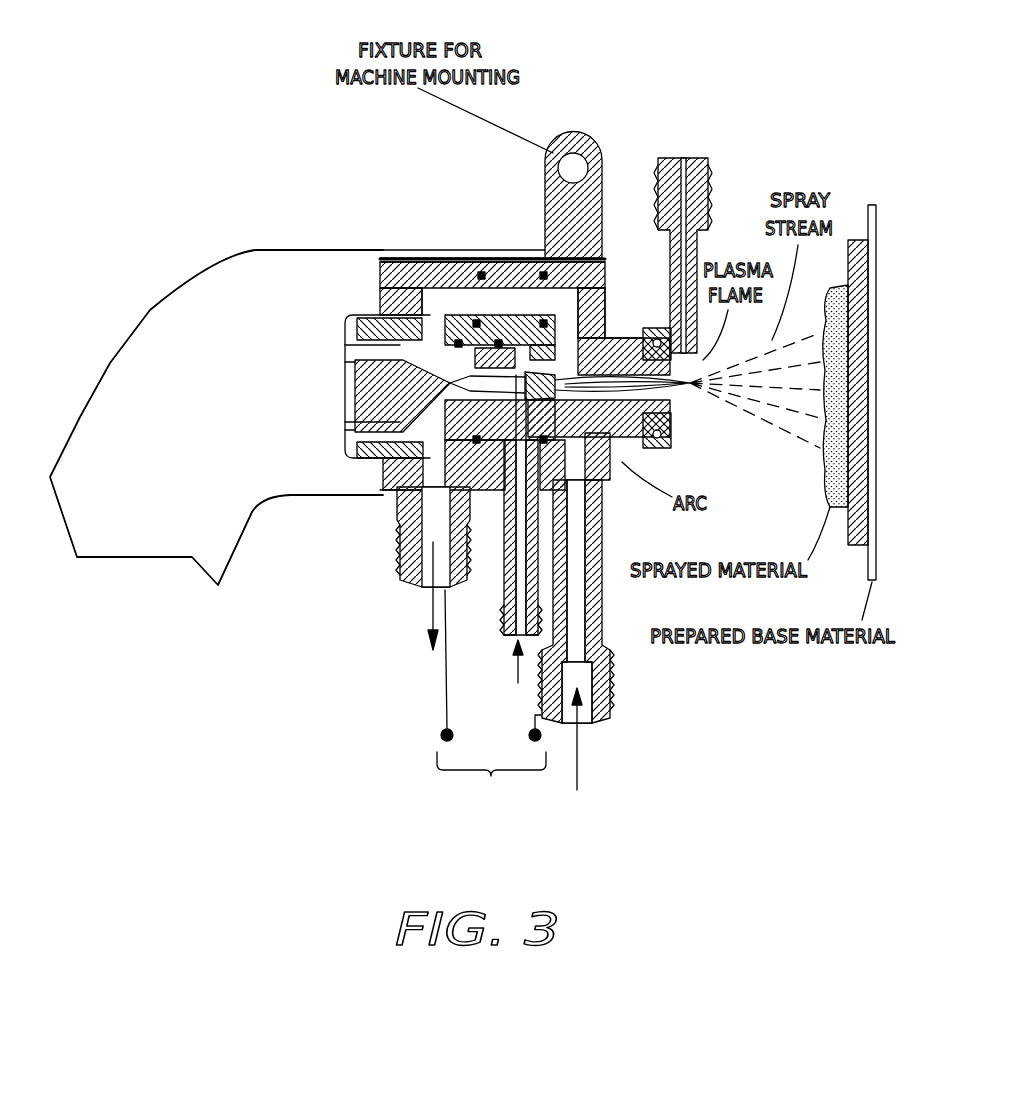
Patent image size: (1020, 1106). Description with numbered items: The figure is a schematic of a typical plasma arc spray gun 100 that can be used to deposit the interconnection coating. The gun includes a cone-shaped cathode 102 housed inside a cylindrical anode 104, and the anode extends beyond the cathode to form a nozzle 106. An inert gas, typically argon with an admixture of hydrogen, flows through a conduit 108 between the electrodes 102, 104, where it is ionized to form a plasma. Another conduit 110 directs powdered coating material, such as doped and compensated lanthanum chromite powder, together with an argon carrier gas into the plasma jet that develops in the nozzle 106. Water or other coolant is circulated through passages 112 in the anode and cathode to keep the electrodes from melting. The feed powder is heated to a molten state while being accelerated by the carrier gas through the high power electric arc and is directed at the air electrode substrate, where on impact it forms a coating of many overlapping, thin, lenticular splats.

The plasma arc spray gun 100 is at (247, 659).
The cone-shaped cathode 102 is at (373, 475).
The cylindrical anode 104 is at (600, 470).
The nozzle 106 is at (653, 448).
The conduit 108 is at (518, 670).
The conduit 110 is at (688, 158).
The passages 112 is at (432, 615).